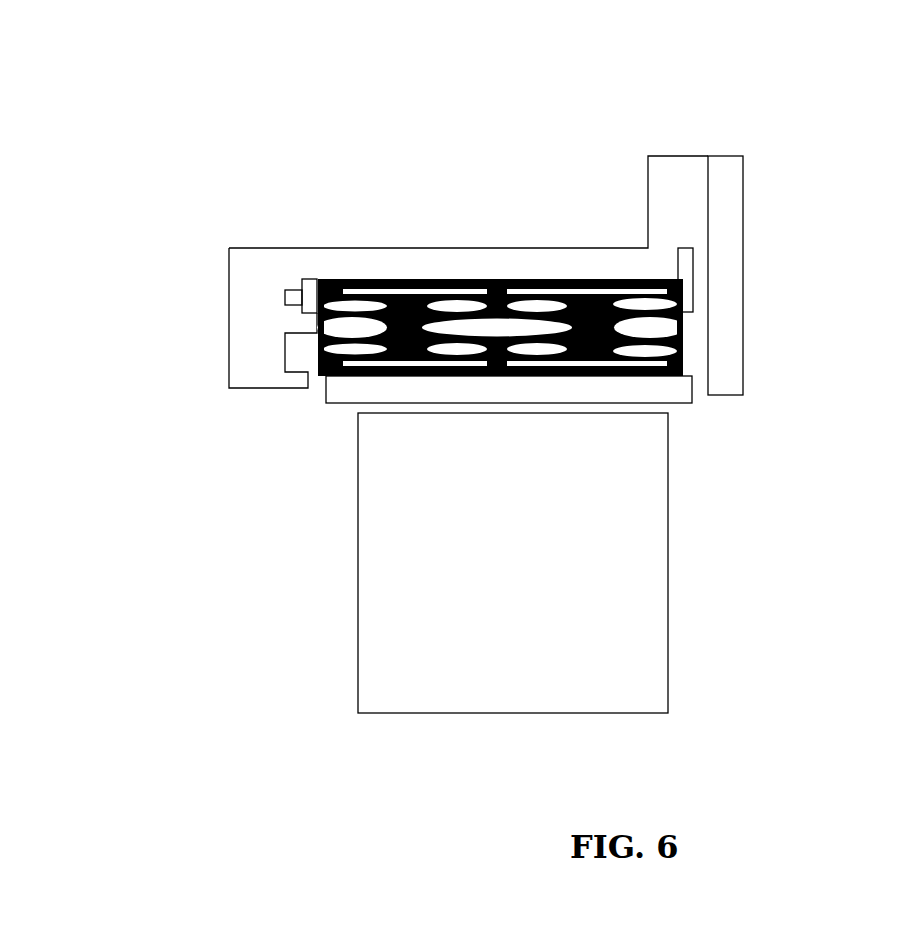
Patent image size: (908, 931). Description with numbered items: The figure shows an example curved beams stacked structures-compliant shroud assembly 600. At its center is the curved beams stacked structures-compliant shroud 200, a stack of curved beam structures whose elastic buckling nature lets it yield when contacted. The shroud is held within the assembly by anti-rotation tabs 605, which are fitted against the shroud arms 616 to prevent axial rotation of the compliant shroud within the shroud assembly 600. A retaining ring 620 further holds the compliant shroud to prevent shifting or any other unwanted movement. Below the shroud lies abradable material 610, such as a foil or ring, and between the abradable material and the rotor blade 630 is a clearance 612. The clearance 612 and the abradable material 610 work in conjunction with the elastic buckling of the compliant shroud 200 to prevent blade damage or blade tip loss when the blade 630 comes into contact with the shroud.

The curved beams stacked structures-compliant shroud assembly 600 is at (770, 102).
The anti-rotation tabs 605 is at (229, 338).
The abradable material 610 is at (678, 404).
The clearance 612 is at (350, 409).
The shroud arms 616 is at (324, 279).
The retaining ring 620 is at (693, 264).
The blade 630 is at (668, 657).
The curved beams stacked structures-compliant shroud 200 is at (592, 266).